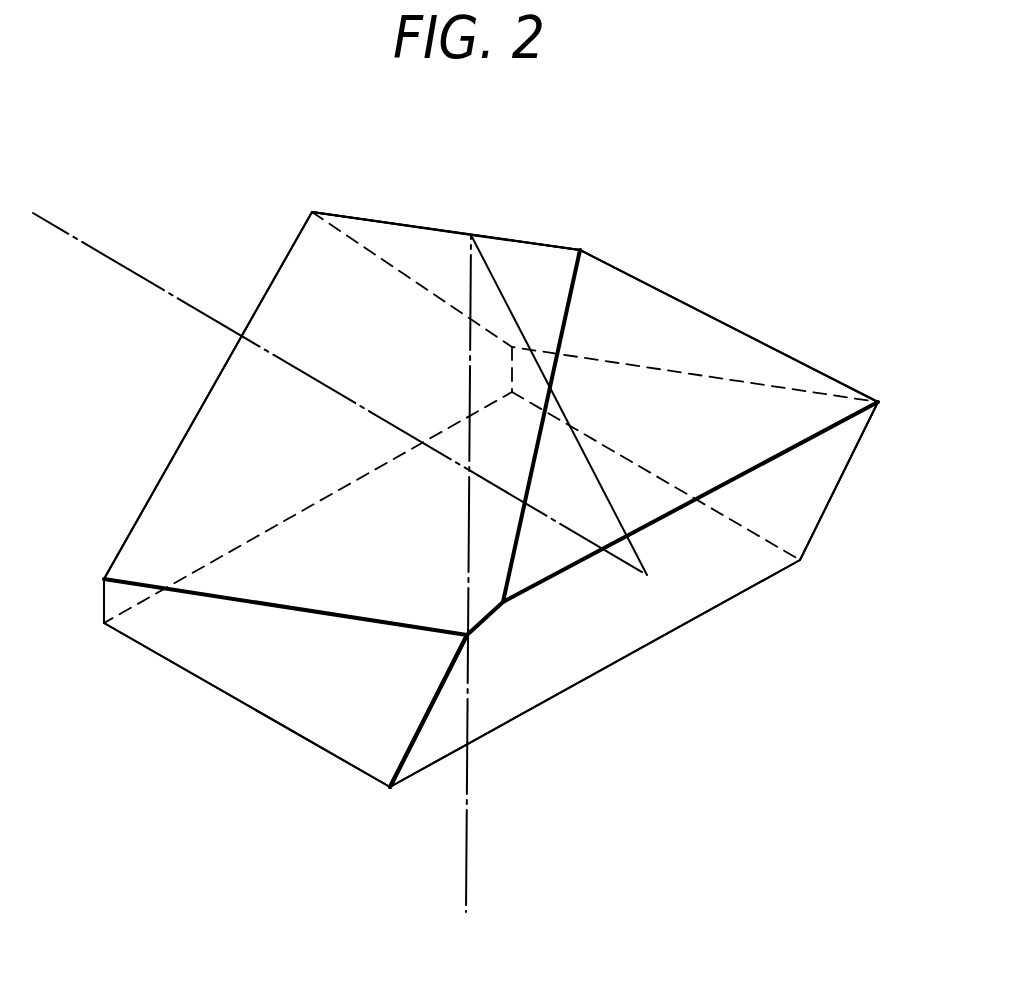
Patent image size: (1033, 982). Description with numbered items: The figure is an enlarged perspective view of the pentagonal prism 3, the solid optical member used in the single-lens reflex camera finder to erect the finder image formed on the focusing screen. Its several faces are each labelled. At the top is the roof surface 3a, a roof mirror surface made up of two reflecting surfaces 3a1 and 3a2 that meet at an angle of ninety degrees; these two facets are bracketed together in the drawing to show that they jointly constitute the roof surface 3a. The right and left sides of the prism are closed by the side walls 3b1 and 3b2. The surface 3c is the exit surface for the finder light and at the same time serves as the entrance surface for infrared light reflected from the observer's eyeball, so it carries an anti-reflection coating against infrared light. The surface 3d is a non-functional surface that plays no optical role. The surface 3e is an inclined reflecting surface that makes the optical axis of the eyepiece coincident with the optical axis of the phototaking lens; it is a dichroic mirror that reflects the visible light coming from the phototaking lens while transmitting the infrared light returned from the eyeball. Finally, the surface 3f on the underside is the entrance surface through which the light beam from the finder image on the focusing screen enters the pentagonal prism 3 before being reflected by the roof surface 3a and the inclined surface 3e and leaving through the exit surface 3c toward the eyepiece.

The pentagonal prism 3 is at (655, 186).
The roof surface 3a is at (410, 157).
The reflecting surface 3a1 is at (542, 292).
The reflecting surface 3a2 is at (360, 328).
The side wall 3b1 is at (782, 488).
The side wall 3b2 is at (353, 705).
The exit surface 3c is at (232, 447).
The non-functional surface 3d is at (647, 325).
The inclined reflecting surface 3e is at (700, 583).
The entrance surface 3f is at (555, 645).